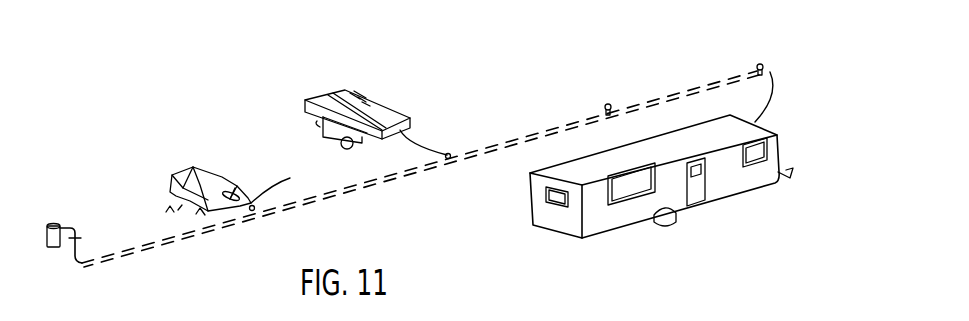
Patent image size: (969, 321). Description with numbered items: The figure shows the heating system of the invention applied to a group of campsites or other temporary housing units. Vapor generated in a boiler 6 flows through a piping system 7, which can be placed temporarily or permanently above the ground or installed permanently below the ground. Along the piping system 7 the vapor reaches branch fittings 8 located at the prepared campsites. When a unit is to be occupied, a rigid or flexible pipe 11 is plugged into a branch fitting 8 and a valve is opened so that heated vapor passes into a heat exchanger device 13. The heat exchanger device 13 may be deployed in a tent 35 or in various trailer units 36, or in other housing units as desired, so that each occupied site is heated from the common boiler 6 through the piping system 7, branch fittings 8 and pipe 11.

The boiler 6 is at (47, 243).
The piping system 7 is at (173, 252).
The branch fitting 8 is at (250, 213).
The rigid or flexible pipe 11 is at (778, 110).
The heat exchanger device 13 is at (236, 188).
The tent 35 is at (216, 162).
The trailer unit 36 is at (386, 91).